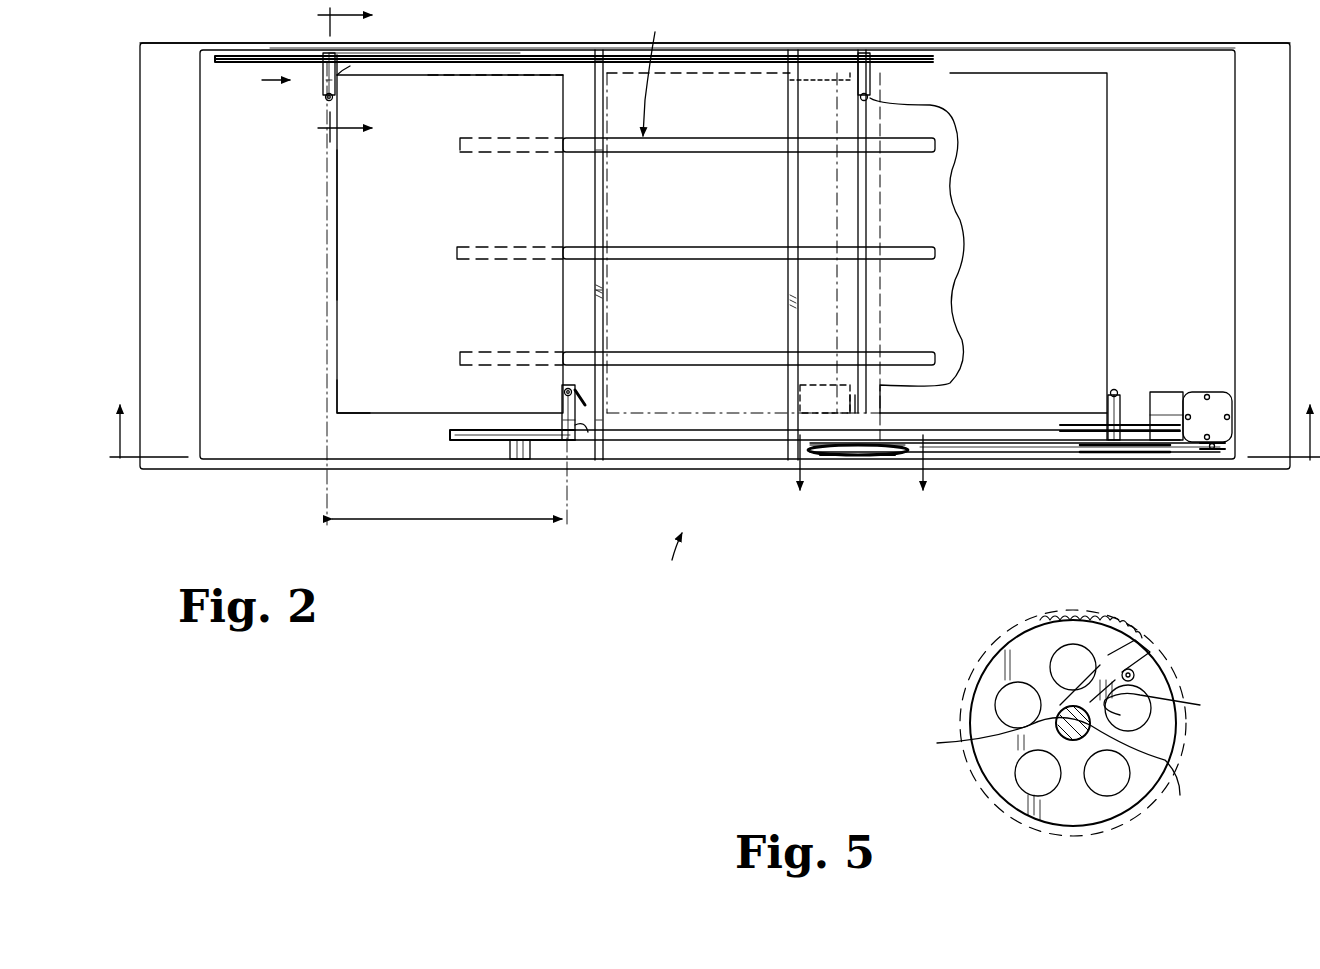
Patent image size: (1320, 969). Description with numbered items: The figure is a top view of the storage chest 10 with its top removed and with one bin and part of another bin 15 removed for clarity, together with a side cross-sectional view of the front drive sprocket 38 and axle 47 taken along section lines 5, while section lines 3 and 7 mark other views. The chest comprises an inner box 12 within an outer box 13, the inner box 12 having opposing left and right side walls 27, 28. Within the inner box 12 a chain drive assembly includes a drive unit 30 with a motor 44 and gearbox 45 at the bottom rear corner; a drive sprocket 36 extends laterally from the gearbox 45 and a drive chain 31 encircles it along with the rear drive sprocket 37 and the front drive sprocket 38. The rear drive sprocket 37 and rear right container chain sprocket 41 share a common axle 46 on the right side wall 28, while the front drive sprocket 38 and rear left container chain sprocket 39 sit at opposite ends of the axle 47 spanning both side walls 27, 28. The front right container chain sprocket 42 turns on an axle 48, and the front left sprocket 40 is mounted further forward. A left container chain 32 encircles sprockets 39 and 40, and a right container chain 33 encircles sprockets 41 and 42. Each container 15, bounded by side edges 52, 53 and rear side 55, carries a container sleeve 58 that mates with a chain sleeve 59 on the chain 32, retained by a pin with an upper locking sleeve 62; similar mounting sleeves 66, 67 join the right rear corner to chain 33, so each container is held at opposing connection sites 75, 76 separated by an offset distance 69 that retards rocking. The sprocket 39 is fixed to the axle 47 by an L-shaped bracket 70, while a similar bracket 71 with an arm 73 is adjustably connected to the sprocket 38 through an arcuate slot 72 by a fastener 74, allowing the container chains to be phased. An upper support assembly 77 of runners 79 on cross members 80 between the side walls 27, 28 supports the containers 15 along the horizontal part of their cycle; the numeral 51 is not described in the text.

In FIG. 2, the storage chest 10 is at (665, 566).
In FIG. 2, the inner box 12 is at (244, 460).
In FIG. 2, the outer box 13 is at (198, 470).
In FIG. 2, the container 15 is at (428, 72).
In FIG. 2, the left side wall 27 is at (1025, 50).
In FIG. 2, the right side wall 28 is at (1020, 445).
In FIG. 2, the drive unit 30 is at (1167, 392).
In FIG. 2, the drive chain 31 is at (980, 452).
In FIG. 2, the left container chain 32 is at (537, 58).
In FIG. 2, the right container chain 33 is at (712, 440).
In FIG. 2, the drive sprocket 36 is at (1213, 452).
In FIG. 2, the rear drive sprocket 37 is at (1140, 455).
In FIG. 2, the front drive sprocket 38 is at (838, 460).
In FIG. 5, the front drive sprocket 38 is at (1097, 630).
In FIG. 2, the rear left side container chain sprocket 39 is at (908, 73).
In FIG. 2, the front left side container chain sprocket 40 is at (232, 56).
In FIG. 2, the rear right side container chain sprocket 41 is at (1122, 392).
In FIG. 2, the front right side container chain sprocket 42 is at (473, 440).
In FIG. 2, the motor 44 is at (1210, 410).
In FIG. 2, the gearbox 45 is at (1155, 408).
In FIG. 2, the common axle 46 is at (1120, 452).
In FIG. 2, the axle 47 is at (858, 182).
In FIG. 5, the axle 47 is at (1041, 757).
In FIG. 2, the axle 48 is at (520, 460).
In FIG. 2, the panel edge 51 is at (337, 240).
In FIG. 2, the left side 52 is at (480, 75).
In FIG. 2, the right side 53 is at (352, 416).
In FIG. 2, the rear side 55 is at (578, 86).
In FIG. 2, the container sleeve 58 is at (322, 85).
In FIG. 2, the chain sleeve 59 is at (342, 70).
In FIG. 2, the upper locking sleeve 62 is at (326, 101).
In FIG. 2, the mounting sleeve 66 is at (580, 410).
In FIG. 2, the mounting sleeve 67 is at (582, 430).
In FIG. 2, the offset distance 69 is at (410, 519).
In FIG. 2, the L-shaped bracket 70 is at (855, 72).
In FIG. 5, the L-shaped bracket 71 is at (1170, 770).
In FIG. 5, the arcuate slot 72 is at (1105, 660).
In FIG. 2, the arm 73 is at (858, 410).
In FIG. 5, the arm 73 is at (1169, 704).
In FIG. 5, the fastener 74 is at (1135, 673).
In FIG. 2, the connection site 75 is at (254, 82).
In FIG. 2, the connection site 76 is at (586, 405).
In FIG. 2, the upper support assembly 77 is at (654, 72).
In FIG. 2, the runner 79 is at (672, 152).
In FIG. 2, the cross member 80 is at (597, 292).
In FIG. 2, the section line 3 is at (715, 451).
In FIG. 2, the section line 5 is at (858, 475).
In FIG. 2, the section line 7 is at (335, 75).